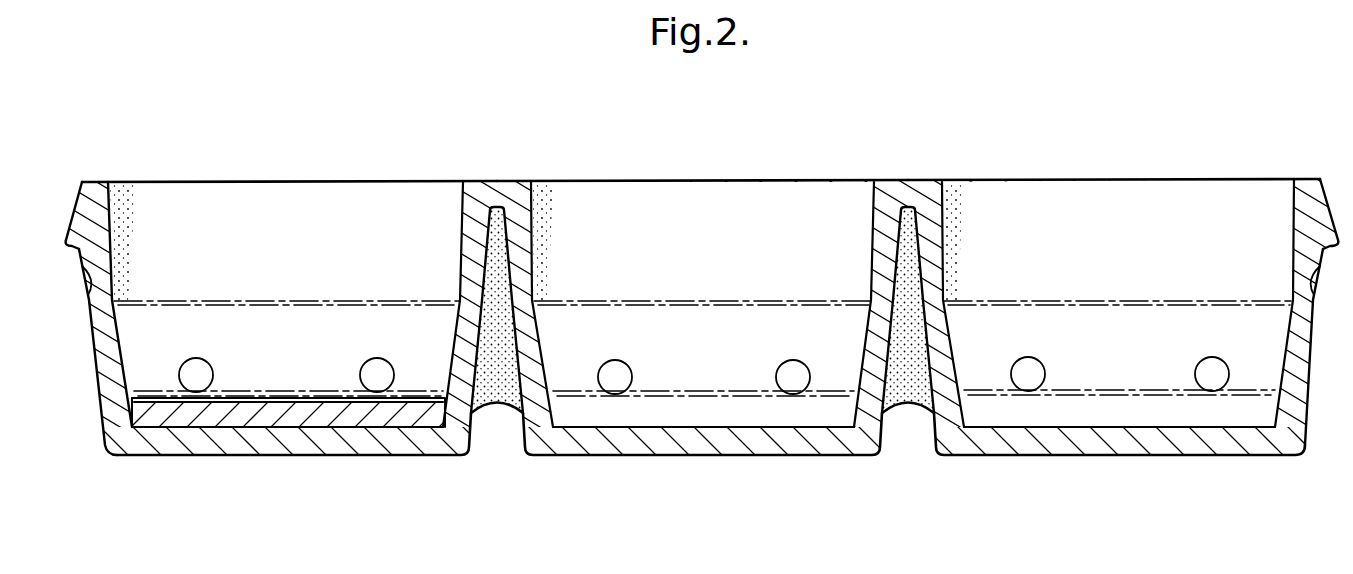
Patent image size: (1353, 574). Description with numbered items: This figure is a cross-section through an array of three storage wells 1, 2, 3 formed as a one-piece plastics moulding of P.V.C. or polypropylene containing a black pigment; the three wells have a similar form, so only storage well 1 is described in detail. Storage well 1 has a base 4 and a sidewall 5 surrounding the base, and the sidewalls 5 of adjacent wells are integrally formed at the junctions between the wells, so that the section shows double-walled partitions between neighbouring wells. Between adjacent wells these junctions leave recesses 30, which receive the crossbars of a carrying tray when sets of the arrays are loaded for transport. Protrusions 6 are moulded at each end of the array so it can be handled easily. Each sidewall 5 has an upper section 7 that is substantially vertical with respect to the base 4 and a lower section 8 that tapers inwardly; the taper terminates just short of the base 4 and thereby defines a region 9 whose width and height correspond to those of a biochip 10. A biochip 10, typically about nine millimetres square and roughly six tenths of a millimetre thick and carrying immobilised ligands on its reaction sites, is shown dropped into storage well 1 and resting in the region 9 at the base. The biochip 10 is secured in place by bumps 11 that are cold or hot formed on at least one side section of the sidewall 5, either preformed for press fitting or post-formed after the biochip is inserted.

The storage well 1 is at (242, 188).
The storage well 2 is at (740, 195).
The storage well 3 is at (1073, 195).
The base 4 is at (233, 445).
The sidewall 5 is at (110, 390).
The protrusions 6 is at (73, 230).
The upper section 7 is at (110, 216).
The lower section 8 is at (124, 347).
The region 9 is at (133, 420).
The biochip 10 is at (370, 415).
The bumps 11 is at (201, 370).
The recesses 30 is at (498, 413).